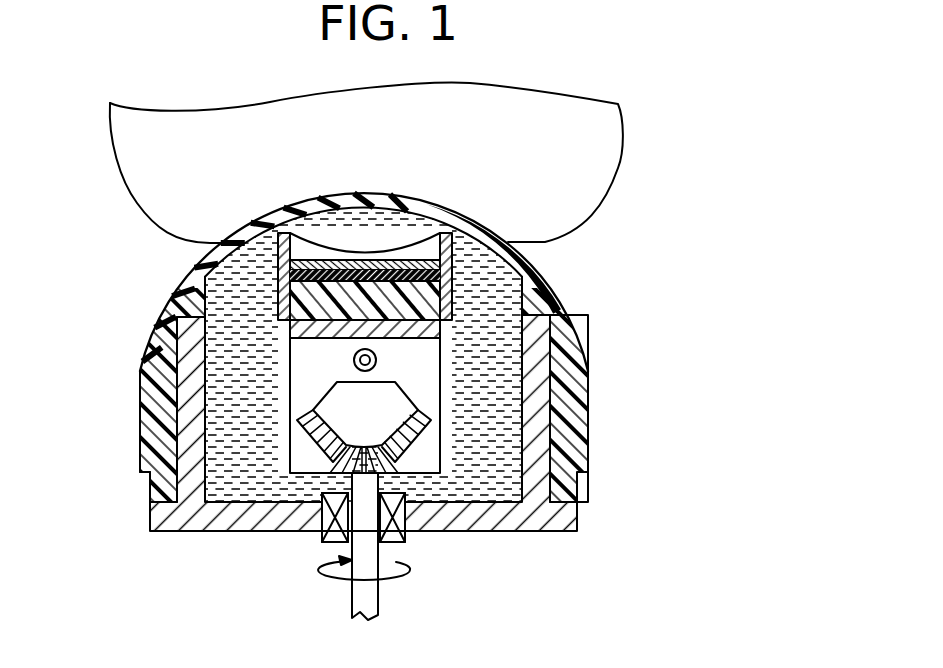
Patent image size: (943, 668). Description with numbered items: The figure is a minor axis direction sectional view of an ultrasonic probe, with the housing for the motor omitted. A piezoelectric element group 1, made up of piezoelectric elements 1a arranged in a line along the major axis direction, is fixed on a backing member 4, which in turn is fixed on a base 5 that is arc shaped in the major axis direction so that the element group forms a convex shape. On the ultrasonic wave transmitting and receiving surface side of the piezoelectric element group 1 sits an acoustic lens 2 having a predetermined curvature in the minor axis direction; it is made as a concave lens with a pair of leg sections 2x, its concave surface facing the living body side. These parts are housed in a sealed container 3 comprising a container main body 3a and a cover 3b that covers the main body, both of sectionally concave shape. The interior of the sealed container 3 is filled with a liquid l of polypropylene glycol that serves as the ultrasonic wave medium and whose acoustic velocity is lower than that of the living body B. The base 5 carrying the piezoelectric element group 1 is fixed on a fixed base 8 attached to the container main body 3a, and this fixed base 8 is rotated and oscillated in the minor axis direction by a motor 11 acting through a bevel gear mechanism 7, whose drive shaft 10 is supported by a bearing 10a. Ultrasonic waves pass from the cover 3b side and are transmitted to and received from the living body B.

The piezoelectric element group 1 is at (364, 255).
The piezoelectric elements 1a is at (265, 219).
The acoustic lens 2 is at (337, 298).
The leg sections 2x is at (445, 297).
The sealed container 3 is at (140, 446).
The container main body 3a is at (193, 522).
The cover 3b is at (150, 478).
The backing member 4 is at (303, 270).
The base 5 is at (322, 323).
The fixed base 8 is at (333, 339).
The motor 11 is at (377, 359).
The bevel gear mechanism 7 is at (423, 458).
The drive shaft 10 is at (351, 598).
The bearing 10a is at (406, 545).
The living body B is at (572, 164).
The liquid l is at (589, 413).